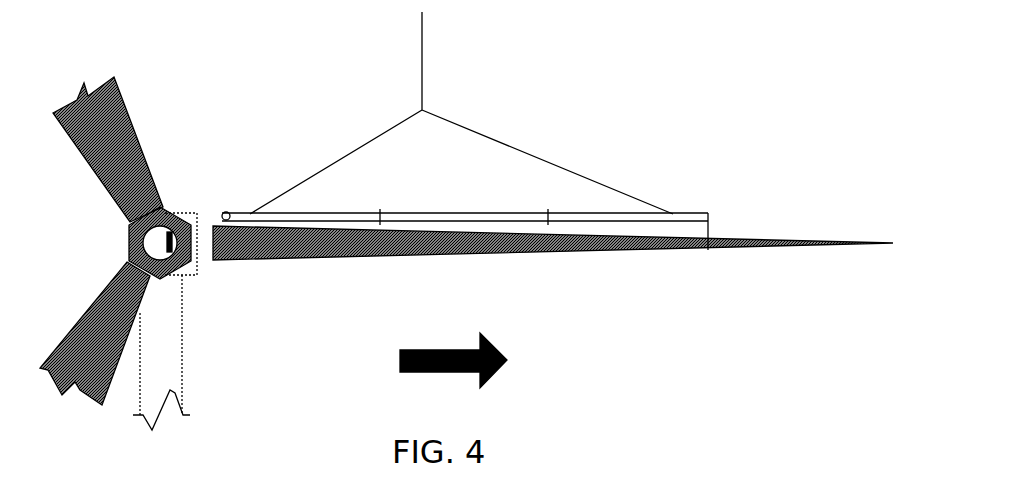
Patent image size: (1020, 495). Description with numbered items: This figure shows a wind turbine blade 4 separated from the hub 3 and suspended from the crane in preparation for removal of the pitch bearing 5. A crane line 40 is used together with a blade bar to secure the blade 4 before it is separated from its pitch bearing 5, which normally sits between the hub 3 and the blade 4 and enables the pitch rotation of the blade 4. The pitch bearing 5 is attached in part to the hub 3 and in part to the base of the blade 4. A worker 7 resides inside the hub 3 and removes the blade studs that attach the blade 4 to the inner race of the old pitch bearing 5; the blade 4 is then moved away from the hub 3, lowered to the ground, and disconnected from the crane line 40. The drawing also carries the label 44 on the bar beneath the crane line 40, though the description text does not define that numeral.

The hub 3 is at (130, 250).
The blade 4 is at (283, 262).
The pitch bearing 5 is at (193, 213).
The worker 7 is at (167, 240).
The crane line 40 is at (422, 60).
The spreader bar 44 is at (675, 212).